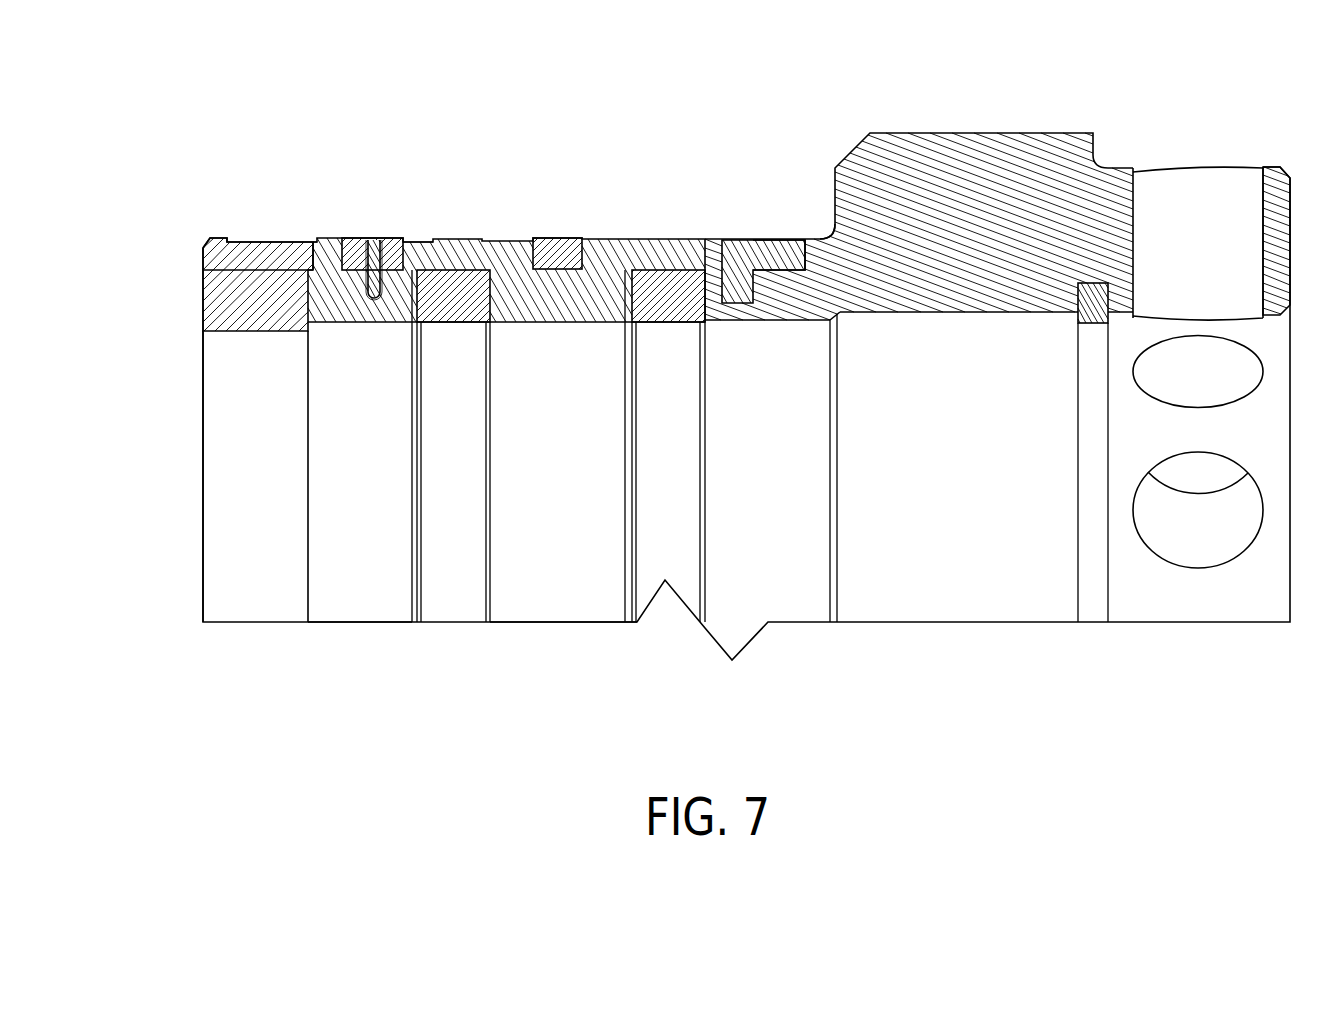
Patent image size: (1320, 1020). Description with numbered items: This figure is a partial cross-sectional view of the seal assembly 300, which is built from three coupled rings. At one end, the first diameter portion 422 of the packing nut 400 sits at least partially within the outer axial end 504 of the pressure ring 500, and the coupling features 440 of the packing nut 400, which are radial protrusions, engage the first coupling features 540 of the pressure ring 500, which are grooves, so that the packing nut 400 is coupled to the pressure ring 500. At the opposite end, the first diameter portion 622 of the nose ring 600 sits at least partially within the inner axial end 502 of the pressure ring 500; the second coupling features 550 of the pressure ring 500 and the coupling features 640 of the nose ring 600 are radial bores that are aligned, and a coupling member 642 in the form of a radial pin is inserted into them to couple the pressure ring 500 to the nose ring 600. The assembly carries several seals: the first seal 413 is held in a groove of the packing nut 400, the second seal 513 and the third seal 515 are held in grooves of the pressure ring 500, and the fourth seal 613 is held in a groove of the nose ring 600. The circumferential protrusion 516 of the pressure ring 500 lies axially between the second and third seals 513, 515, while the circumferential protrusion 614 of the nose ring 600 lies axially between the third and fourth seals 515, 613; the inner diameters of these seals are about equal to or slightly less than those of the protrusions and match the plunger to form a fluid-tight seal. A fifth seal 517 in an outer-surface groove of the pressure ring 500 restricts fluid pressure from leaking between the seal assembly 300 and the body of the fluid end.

The seal assembly 300 is at (157, 665).
The packing nut 400 is at (1000, 131).
The first seal 413 is at (1093, 326).
The first diameter portion 422 is at (780, 267).
The coupling features 440 is at (712, 194).
The pressure ring 500 is at (590, 238).
The inner axial end 502 is at (322, 250).
The outer axial end 504 is at (808, 252).
The second seal 513 is at (668, 330).
The third seal 515 is at (450, 330).
The circumferential protrusion 516 is at (573, 548).
The fifth seal 517 is at (555, 238).
The first coupling features 540 is at (715, 266).
The second coupling features 550 is at (350, 204).
The nose ring 600 is at (248, 242).
The fourth seal 613 is at (258, 335).
The circumferential protrusion 614 is at (388, 548).
The first diameter portion 622 is at (405, 247).
The coupling features 640 is at (369, 237).
The coupling member 642 is at (382, 243).